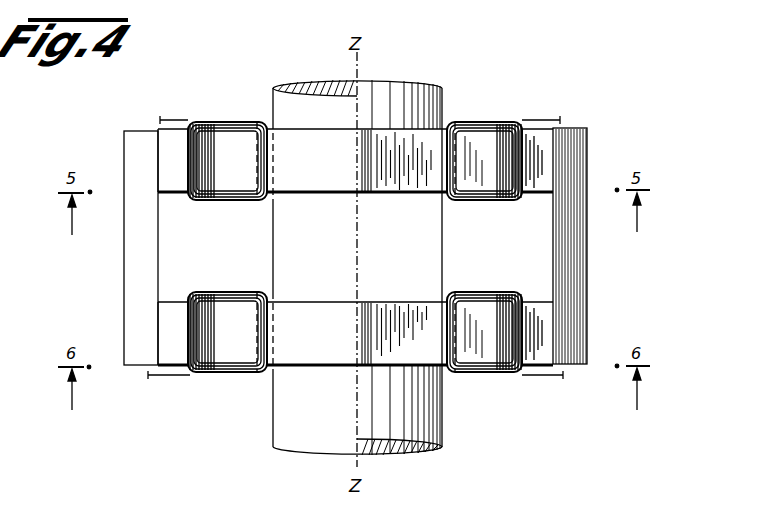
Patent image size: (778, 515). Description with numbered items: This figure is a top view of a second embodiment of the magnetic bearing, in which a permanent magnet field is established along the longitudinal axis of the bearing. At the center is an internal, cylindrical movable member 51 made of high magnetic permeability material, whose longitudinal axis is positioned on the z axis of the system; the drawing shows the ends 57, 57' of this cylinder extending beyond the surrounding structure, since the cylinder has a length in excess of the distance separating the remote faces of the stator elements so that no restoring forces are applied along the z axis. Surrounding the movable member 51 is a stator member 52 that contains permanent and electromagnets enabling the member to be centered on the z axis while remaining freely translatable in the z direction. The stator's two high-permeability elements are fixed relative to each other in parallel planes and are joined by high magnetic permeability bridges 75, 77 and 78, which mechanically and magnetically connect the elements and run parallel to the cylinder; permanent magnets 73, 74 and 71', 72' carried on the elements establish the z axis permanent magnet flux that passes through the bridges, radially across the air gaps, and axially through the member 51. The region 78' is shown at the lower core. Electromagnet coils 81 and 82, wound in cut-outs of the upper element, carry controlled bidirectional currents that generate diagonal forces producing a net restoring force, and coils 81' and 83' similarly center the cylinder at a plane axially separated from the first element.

The movable member 51 is at (412, 80).
The stator member 52 is at (625, 266).
The shaft upper end 57 is at (329, 92).
The shaft lower end 57' is at (339, 416).
The permanent magnet 71' is at (567, 374).
The permanent magnet 72' is at (139, 373).
The permanent magnet 73 is at (542, 148).
The permanent magnet 74 is at (165, 143).
The high magnetic permeability bridge 75 is at (400, 138).
The high magnetic permeability bridge 77 is at (583, 160).
The high magnetic permeability bridge 78 is at (103, 243).
The lower rotor core 78' is at (422, 371).
The coil 81 is at (210, 140).
The coil 81' is at (508, 372).
The coil 82 is at (509, 125).
The coil 83' is at (210, 367).